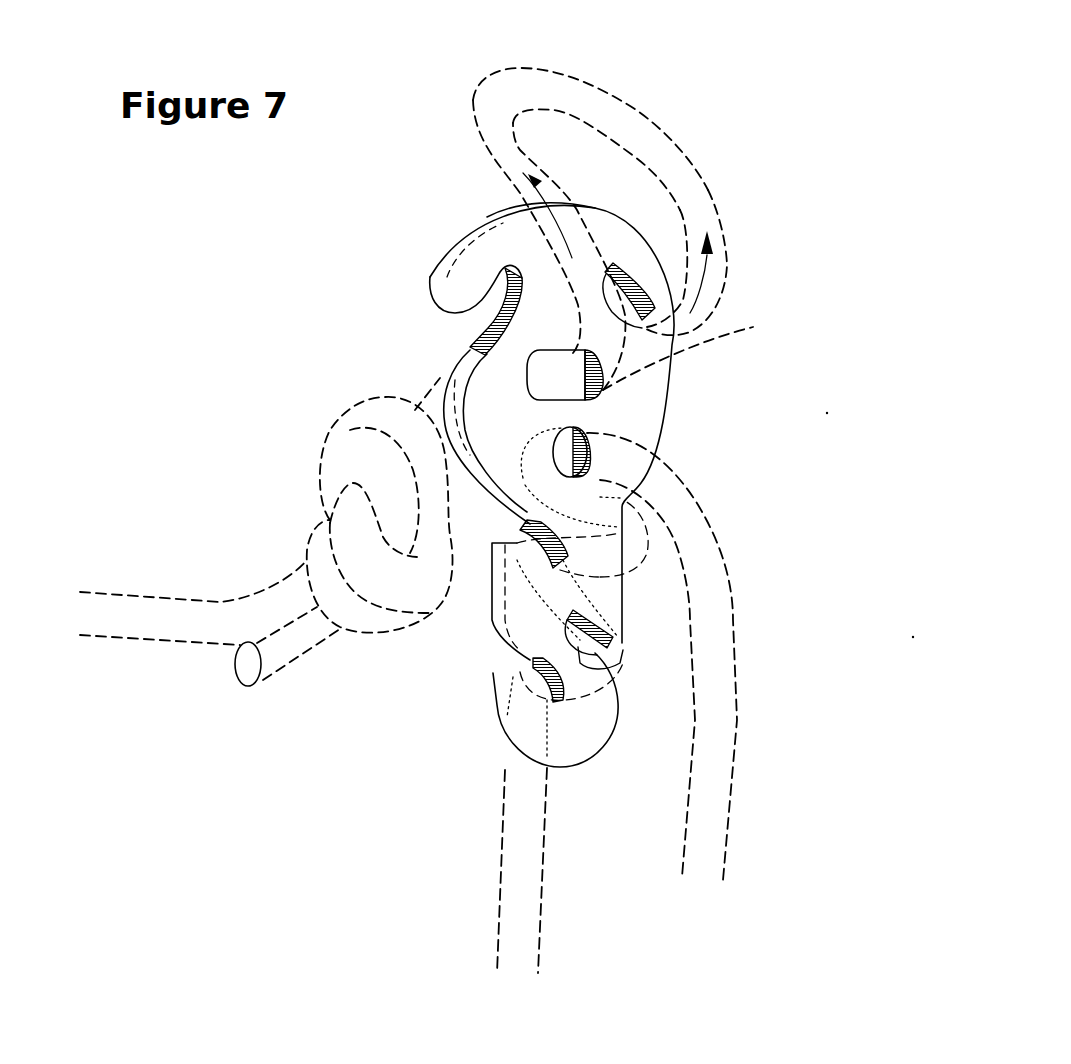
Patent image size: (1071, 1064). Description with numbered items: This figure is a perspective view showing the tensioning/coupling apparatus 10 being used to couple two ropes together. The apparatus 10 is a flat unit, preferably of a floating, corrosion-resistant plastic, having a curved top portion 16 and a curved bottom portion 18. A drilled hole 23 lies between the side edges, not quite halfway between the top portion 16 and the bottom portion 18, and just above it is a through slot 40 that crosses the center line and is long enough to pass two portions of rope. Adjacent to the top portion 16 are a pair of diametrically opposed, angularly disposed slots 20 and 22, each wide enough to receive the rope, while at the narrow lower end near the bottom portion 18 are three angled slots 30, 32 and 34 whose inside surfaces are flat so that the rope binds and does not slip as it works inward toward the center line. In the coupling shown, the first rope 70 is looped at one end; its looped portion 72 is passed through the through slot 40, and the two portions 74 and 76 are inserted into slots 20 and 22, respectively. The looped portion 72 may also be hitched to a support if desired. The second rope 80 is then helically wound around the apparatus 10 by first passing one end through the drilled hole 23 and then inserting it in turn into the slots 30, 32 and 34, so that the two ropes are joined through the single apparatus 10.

The tensioning/coupling apparatus 10 is at (640, 218).
The curved top portion 16 is at (587, 203).
The curved bottom portion 18 is at (557, 767).
The slot 20 is at (492, 323).
The slot 22 is at (645, 320).
The drilled hole 23 is at (590, 453).
The slot 30 is at (523, 527).
The slot 32 is at (583, 650).
The slot 34 is at (532, 660).
The through slot 40 is at (603, 375).
The rope 70 is at (127, 623).
The looped portion 72 is at (657, 118).
The portion 74 is at (503, 173).
The portion 76 is at (727, 223).
The second rope 80 is at (733, 777).